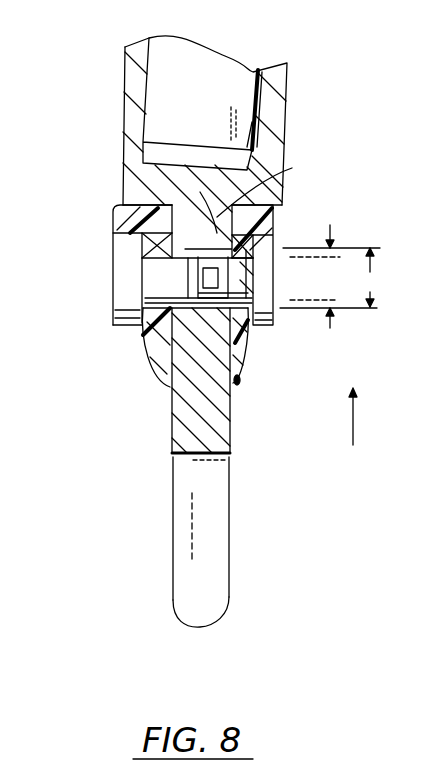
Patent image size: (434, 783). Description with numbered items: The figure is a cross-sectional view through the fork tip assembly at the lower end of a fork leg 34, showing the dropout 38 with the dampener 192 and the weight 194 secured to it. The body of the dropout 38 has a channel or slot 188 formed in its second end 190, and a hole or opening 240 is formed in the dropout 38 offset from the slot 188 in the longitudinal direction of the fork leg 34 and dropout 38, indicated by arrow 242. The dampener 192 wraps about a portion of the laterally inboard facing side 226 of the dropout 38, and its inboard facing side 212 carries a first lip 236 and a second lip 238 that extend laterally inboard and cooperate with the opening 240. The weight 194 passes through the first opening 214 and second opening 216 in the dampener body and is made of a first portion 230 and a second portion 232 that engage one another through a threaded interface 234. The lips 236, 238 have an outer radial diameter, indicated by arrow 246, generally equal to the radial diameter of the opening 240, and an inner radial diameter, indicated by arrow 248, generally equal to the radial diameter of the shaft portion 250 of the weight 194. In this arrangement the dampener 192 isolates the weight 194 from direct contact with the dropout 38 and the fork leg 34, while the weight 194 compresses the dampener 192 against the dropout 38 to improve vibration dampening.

The fork leg 34 is at (235, 105).
The dropout 38 is at (268, 193).
The opening 240 is at (268, 193).
The first portion 230 is at (120, 260).
The second lip 238 is at (135, 230).
The first lip 236 is at (262, 215).
The weight 194 is at (115, 313).
The shaft portion 250 is at (148, 279).
The first opening 214 is at (243, 255).
The second portion 232 is at (266, 280).
The inboard facing side 212 is at (240, 381).
The dampener 192 is at (160, 372).
The second opening 216 is at (148, 333).
The threaded interface 234 is at (247, 327).
The laterally inboard facing side 226 is at (233, 415).
The slot 188 is at (208, 520).
The second end 190 is at (224, 612).
The arrow 242 is at (353, 420).
The arrow 246 is at (378, 277).
The arrow 248 is at (330, 291).